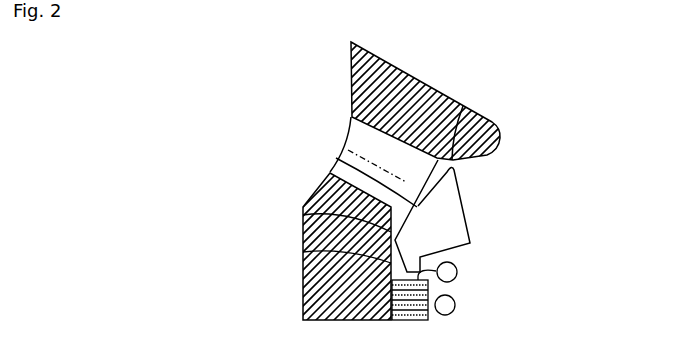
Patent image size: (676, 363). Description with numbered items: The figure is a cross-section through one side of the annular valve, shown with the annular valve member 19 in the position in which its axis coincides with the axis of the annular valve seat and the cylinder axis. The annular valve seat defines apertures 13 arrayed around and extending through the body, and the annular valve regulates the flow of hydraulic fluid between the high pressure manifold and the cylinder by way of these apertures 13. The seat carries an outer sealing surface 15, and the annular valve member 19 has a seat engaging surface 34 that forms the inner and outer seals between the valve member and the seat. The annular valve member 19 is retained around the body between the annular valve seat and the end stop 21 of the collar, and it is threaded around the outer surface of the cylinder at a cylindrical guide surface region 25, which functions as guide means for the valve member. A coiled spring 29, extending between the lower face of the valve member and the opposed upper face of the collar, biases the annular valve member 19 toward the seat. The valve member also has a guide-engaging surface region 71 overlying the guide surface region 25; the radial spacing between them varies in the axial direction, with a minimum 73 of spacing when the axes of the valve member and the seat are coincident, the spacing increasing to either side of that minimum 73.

The apertures 13 is at (348, 163).
The outer sealing surface 15 is at (463, 106).
The annular valve member 19 is at (457, 218).
The end stop 21 is at (452, 278).
The cylindrical guide surface region 25 is at (303, 253).
The coiled spring 29 is at (447, 312).
The seat engaging surface 34 is at (332, 172).
The guide-engaging surface region 71 is at (303, 230).
The minimum of spacing 73 is at (303, 208).